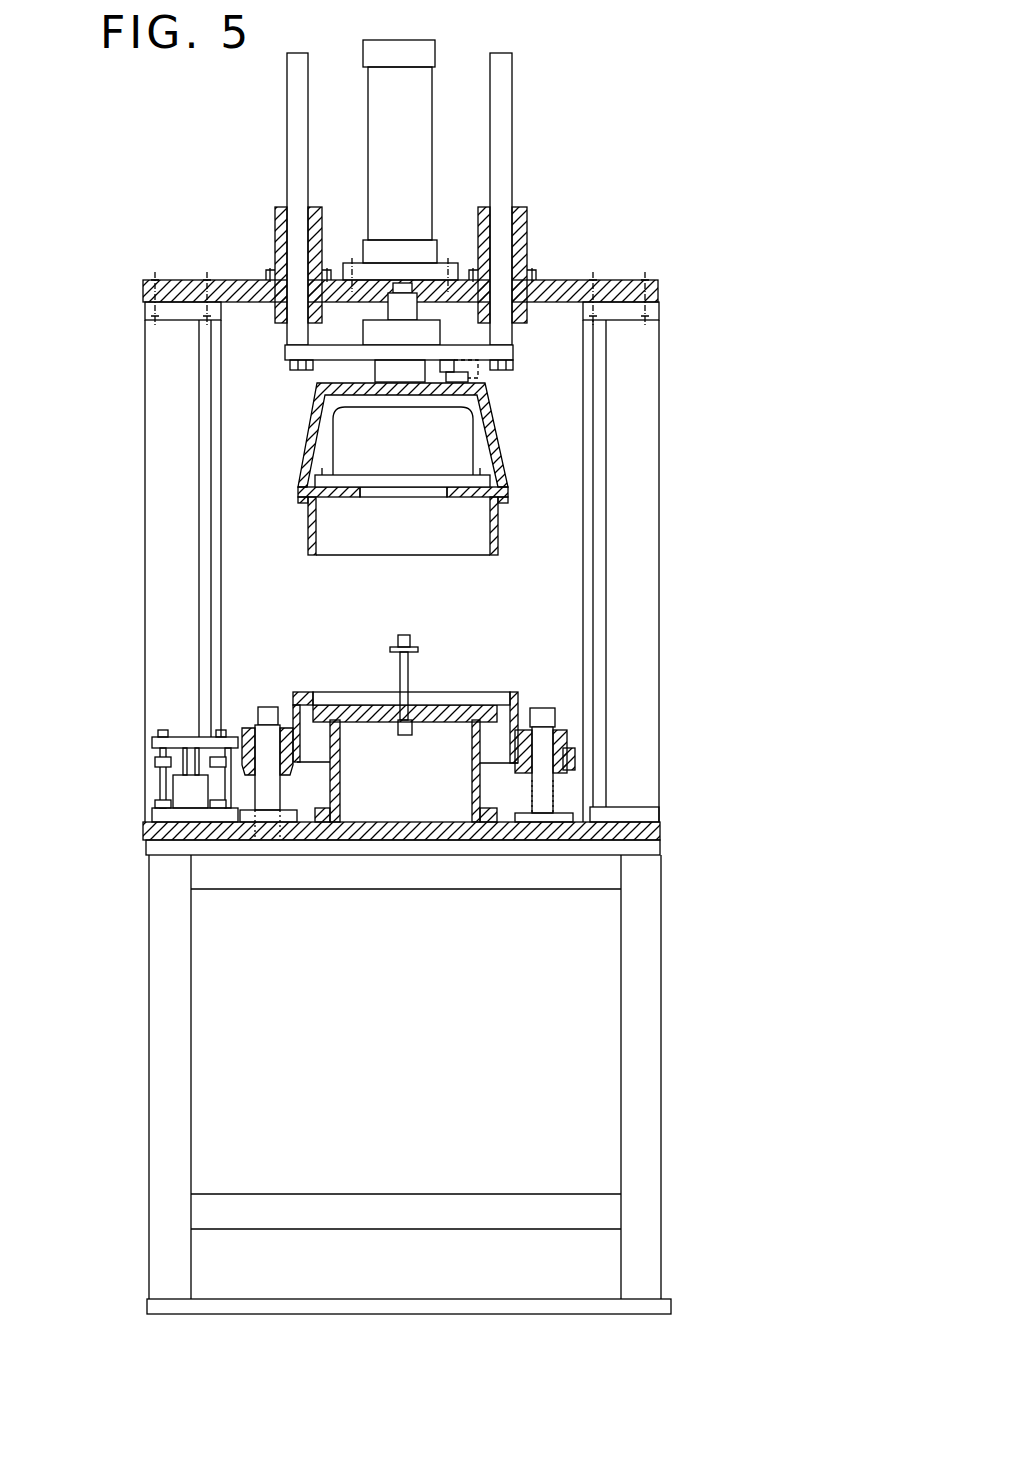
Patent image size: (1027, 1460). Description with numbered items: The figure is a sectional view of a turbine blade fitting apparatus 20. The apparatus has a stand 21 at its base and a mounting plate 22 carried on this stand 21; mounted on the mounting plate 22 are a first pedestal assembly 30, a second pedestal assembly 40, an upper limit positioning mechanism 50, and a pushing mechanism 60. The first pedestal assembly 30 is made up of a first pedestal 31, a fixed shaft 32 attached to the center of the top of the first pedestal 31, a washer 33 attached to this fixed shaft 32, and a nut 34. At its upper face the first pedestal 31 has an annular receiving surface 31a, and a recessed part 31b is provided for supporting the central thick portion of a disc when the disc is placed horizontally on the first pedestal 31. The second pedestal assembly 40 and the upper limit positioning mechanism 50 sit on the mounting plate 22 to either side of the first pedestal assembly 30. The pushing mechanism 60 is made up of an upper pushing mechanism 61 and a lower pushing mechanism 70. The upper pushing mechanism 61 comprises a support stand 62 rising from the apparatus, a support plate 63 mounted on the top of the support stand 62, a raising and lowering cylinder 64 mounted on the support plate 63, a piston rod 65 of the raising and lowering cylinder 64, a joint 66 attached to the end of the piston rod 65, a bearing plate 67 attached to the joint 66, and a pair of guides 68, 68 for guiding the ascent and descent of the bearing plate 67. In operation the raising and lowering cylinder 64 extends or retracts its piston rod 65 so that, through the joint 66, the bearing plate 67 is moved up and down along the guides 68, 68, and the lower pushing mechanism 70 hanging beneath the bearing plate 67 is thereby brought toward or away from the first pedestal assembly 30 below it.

The turbine blade fitting apparatus 20 is at (111, 214).
The stand 21 is at (661, 1035).
The mounting plate 22 is at (660, 833).
The first pedestal assembly 30 is at (772, 437).
The first pedestal 31 is at (497, 713).
The annular receiving surface 31a is at (317, 702).
The recessed part 31b is at (357, 700).
The fixed shaft 32 is at (409, 672).
The washer 33 is at (418, 651).
The nut 34 is at (412, 637).
The second pedestal assembly 40 is at (573, 723).
The upper limit positioning mechanism 50 is at (147, 778).
The pushing mechanism 60 is at (850, 138).
The upper pushing mechanism 61 is at (776, 50).
The support stand 62 is at (605, 367).
The support plate 63 is at (528, 283).
The raising and lowering cylinder 64 is at (437, 177).
The piston rod 65 is at (413, 322).
The joint 66 is at (527, 220).
The bearing plate 67 is at (477, 344).
The guides 68 is at (274, 237).
The lower pushing mechanism 70 is at (510, 453).